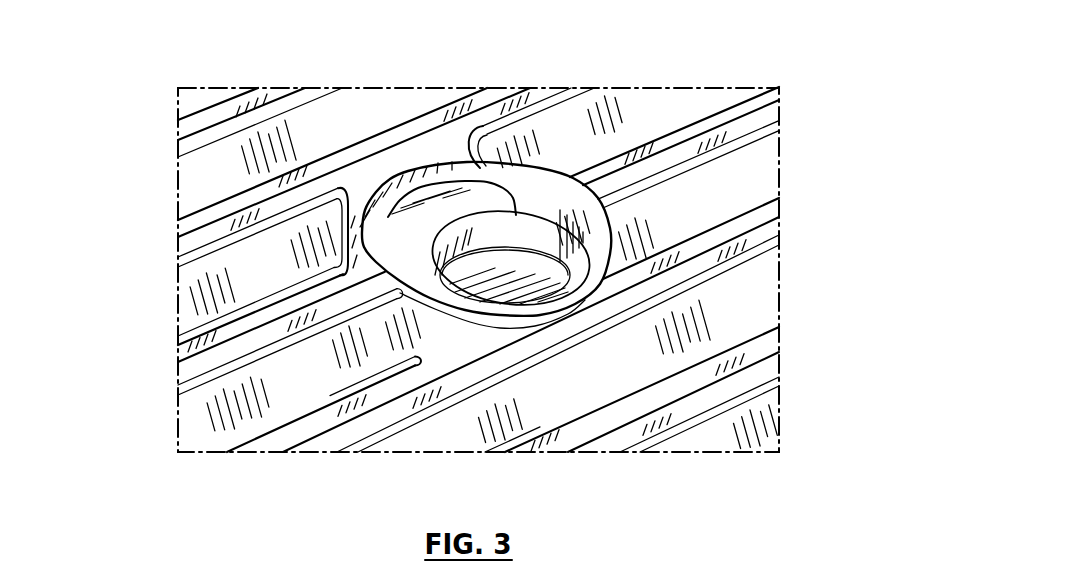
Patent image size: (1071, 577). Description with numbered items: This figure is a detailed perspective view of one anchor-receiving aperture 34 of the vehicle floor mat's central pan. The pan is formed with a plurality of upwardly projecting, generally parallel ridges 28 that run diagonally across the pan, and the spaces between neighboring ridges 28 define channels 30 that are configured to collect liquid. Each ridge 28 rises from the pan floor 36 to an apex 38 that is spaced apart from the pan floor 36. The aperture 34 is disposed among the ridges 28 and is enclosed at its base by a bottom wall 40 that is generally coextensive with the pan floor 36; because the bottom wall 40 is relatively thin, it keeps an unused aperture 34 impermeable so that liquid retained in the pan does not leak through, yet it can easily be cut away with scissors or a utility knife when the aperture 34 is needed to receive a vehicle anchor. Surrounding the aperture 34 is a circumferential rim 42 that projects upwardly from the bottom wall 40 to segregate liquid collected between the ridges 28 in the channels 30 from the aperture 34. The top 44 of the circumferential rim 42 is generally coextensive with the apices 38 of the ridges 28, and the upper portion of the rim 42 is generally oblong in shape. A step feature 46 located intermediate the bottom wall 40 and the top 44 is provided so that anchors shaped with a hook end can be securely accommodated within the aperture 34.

The ridges 28 is at (216, 232).
The channels 30 is at (233, 278).
The aperture 34 is at (436, 176).
The pan floor 36 is at (233, 333).
The apex 38 is at (762, 233).
The bottom wall 40 is at (533, 278).
The circumferential rim 42 is at (525, 205).
The top of the circumferential rim 44 is at (495, 160).
The step feature 46 is at (398, 220).